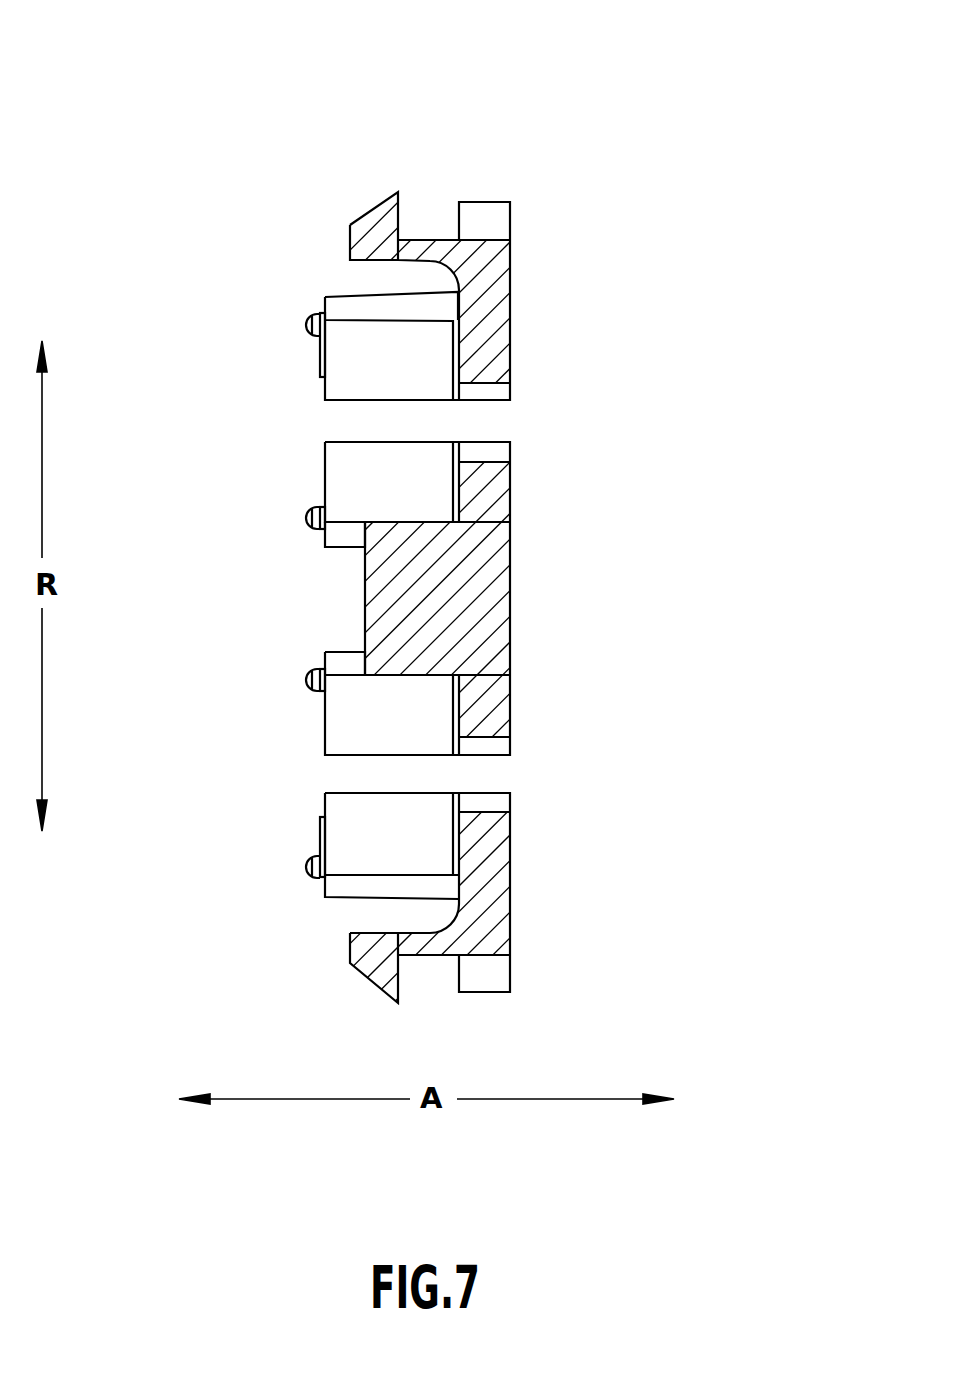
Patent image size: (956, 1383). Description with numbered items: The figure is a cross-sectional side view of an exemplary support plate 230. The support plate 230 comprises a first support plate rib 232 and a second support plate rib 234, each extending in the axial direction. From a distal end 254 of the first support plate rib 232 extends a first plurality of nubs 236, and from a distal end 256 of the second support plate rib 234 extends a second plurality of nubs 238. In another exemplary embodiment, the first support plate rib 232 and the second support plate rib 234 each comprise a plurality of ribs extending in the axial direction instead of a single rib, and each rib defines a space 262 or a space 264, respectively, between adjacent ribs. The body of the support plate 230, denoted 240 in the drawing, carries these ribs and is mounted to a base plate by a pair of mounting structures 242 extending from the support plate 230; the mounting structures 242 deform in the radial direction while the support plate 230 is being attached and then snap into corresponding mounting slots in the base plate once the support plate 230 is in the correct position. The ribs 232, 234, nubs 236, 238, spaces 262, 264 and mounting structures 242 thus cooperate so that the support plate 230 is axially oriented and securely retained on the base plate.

The support plate 230 is at (168, 86).
The first support plate rib 232 is at (387, 307).
The second support plate rib 234 is at (341, 658).
The first plurality of nubs 236 is at (307, 328).
The second plurality of nubs 238 is at (306, 680).
The carrier 240 is at (510, 421).
The mounting structures 242 is at (385, 212).
The distal end of first support plate rib 254 is at (324, 305).
The distal end of second support plate rib 256 is at (326, 725).
The space 262 is at (320, 421).
The space 264 is at (323, 778).